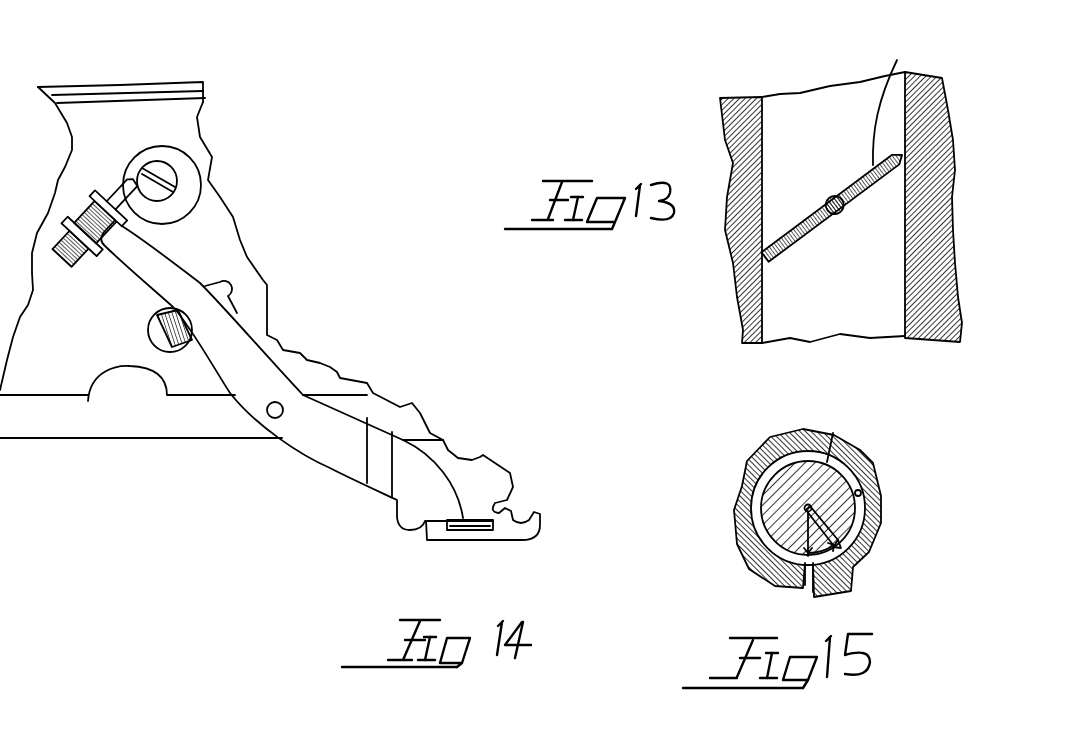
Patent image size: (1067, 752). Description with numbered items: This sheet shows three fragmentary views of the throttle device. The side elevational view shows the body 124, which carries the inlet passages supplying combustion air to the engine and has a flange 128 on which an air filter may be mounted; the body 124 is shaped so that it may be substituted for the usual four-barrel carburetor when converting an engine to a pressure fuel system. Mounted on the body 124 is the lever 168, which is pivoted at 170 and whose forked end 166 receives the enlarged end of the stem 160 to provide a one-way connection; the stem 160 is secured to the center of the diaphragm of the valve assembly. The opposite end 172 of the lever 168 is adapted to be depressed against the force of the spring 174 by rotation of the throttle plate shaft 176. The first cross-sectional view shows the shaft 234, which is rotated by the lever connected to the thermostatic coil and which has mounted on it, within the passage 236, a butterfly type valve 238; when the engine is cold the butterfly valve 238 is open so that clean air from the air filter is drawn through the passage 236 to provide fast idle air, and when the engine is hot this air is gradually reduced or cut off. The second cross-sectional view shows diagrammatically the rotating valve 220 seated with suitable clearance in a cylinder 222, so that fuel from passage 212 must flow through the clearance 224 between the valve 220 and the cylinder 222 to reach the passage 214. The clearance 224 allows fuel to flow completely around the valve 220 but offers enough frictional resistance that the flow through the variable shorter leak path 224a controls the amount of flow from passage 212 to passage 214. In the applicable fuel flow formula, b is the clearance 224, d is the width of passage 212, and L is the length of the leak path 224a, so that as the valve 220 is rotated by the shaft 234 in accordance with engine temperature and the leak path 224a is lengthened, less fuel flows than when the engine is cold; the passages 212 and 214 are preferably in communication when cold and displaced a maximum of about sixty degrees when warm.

In FIG. 14, the body 124 is at (173, 130).
In FIG. 13, the body 124 is at (918, 110).
In FIG. 14, the flange 128 is at (167, 95).
In FIG. 14, the throttle plate shaft 176 is at (165, 171).
In FIG. 14, the lever 168 is at (238, 358).
In FIG. 14, the pivot 170 is at (280, 402).
In FIG. 14, the spring 174 is at (178, 353).
In FIG. 14, the opposite end of lever 172 is at (118, 183).
In FIG. 14, the stem 160 is at (463, 527).
In FIG. 14, the forked end 166 is at (457, 517).
In FIG. 13, the butterfly type valve 238 is at (897, 101).
In FIG. 13, the passage 236 is at (890, 132).
In FIG. 13, the shaft 234 is at (843, 210).
In FIG. 15, the rotating valve 220 is at (742, 547).
In FIG. 15, the clearance 224 is at (758, 495).
In FIG. 15, the leak path 224a is at (851, 439).
In FIG. 15, the cylinder 222 is at (863, 490).
In FIG. 15, the passage 212 is at (858, 549).
In FIG. 15, the passage 214 is at (810, 585).
In FIG. 15, the width of passage d is at (812, 508).
In FIG. 15, the length of leak path L is at (845, 542).
In FIG. 15, the clearance b is at (852, 567).